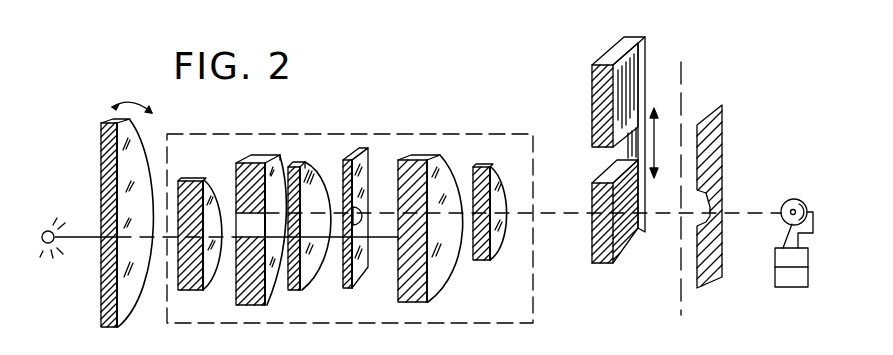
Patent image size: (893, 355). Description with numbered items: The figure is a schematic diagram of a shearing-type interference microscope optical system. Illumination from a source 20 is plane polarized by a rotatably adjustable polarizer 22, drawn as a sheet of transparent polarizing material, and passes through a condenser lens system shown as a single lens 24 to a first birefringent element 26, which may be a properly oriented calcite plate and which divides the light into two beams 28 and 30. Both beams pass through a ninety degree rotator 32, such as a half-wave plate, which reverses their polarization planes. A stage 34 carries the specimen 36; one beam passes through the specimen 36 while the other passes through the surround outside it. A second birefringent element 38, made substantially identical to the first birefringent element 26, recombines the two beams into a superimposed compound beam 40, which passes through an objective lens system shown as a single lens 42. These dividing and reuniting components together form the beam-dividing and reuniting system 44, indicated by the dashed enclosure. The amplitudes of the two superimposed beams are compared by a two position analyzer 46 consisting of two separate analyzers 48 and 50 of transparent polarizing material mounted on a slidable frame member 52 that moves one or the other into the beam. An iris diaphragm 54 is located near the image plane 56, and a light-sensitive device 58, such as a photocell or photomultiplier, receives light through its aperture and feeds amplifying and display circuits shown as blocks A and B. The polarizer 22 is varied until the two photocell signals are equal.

The source 20 is at (43, 230).
The rotatably adjustable polarizer 22 is at (101, 160).
The condenser lens system 24 is at (210, 188).
The first birefringent element 26 is at (255, 157).
The beam 28 is at (292, 163).
The beam 30 is at (276, 288).
The 90° rotator 32 is at (310, 162).
The stage 34 is at (355, 158).
The specimen 36 is at (358, 208).
The second birefringent element 38 is at (426, 156).
The compound beam 40 is at (533, 213).
The objective lens system 42 is at (494, 172).
The beam-dividing and reuniting system 44 is at (412, 326).
The two position analyzer 46 is at (615, 162).
The analyzer 48 is at (593, 83).
The analyzer 50 is at (592, 244).
The slidable frame member 52 is at (644, 58).
The iris diaphragm 54 is at (716, 126).
The image plane 56 is at (682, 75).
The light-sensitive device 58 is at (787, 202).